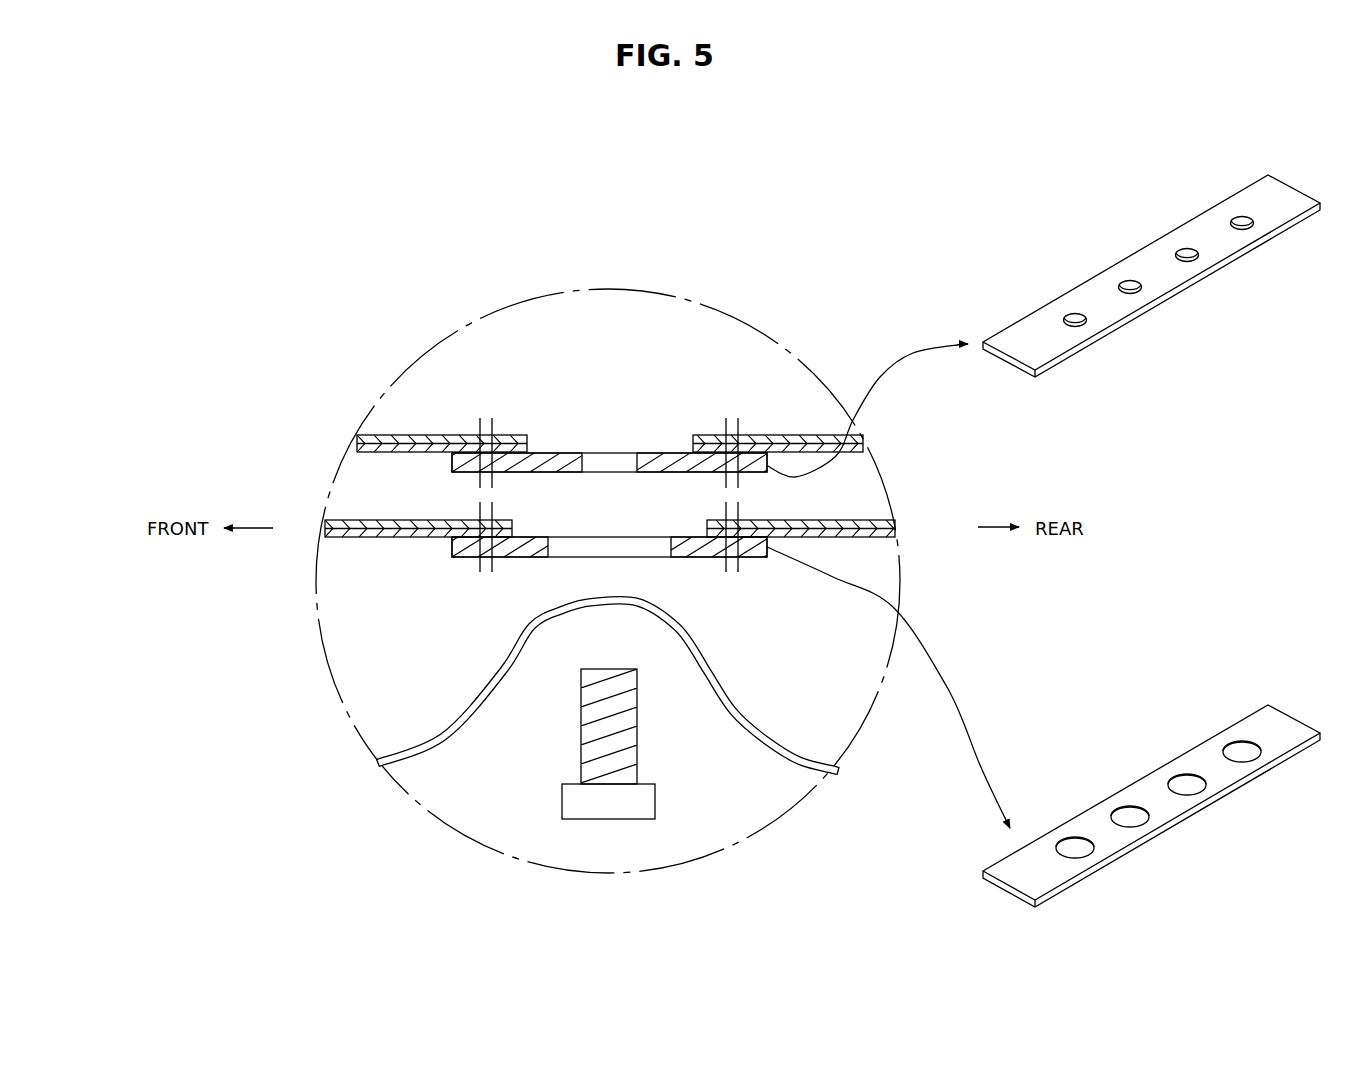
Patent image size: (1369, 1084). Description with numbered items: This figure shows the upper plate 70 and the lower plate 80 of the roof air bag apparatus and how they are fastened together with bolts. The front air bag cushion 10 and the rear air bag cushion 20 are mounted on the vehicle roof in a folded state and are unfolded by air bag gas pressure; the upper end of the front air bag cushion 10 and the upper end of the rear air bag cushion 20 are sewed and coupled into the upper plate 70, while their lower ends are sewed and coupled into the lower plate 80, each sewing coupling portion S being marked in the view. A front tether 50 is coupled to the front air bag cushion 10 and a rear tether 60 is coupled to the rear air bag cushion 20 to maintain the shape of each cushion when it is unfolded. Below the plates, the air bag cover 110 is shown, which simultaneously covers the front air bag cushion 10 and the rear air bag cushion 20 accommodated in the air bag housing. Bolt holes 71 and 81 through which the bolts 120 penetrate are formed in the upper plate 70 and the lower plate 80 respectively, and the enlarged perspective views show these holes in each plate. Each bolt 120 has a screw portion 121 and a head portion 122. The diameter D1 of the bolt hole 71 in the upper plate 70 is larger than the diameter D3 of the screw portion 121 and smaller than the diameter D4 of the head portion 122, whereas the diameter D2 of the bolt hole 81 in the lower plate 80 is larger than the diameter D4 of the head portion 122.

The front air bag cushion 10 is at (383, 443).
The rear air bag cushion 20 is at (793, 435).
The front tether 50 is at (375, 519).
The rear tether 60 is at (848, 520).
The upper plate 70 is at (664, 466).
The bolt hole 71 is at (1127, 285).
The lower plate 80 is at (452, 557).
The bolt hole 81 is at (1127, 815).
The air bag cover 110 is at (448, 740).
The bolt 120 is at (652, 817).
The screw portion 121 is at (630, 737).
The head portion 122 is at (592, 798).
The sewing coupling portion S is at (480, 427).
The diameter of the bolt hole in the upper plate D1 is at (637, 452).
The diameter of the bolt hole in the lower plate D2 is at (671, 540).
The diameter of the screw portion D3 is at (683, 710).
The diameter of the head portion D4 is at (702, 802).